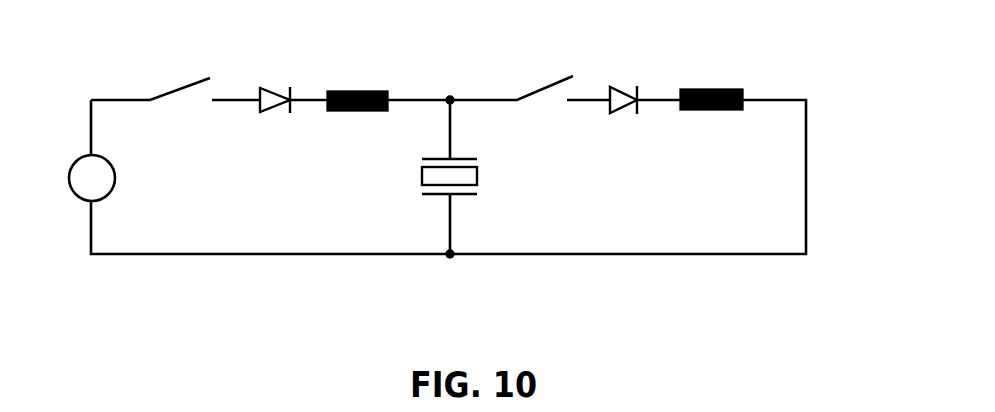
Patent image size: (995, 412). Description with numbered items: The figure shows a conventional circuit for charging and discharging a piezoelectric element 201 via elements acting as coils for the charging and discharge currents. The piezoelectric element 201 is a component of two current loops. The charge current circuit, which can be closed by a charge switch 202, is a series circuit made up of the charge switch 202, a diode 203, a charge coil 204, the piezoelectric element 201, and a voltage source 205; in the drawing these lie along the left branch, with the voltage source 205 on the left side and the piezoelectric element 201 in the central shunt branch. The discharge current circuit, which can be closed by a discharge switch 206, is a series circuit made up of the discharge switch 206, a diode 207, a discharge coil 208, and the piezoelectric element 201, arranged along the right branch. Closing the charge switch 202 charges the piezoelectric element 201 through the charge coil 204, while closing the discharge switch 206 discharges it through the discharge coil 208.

The piezoelectric element 201 is at (475, 177).
The charge switch 202 is at (176, 82).
The diode 203 is at (276, 89).
The charge coil 204 is at (357, 88).
The voltage source 205 is at (119, 178).
The discharge switch 206 is at (540, 82).
The diode 207 is at (629, 89).
The discharge coil 208 is at (711, 86).